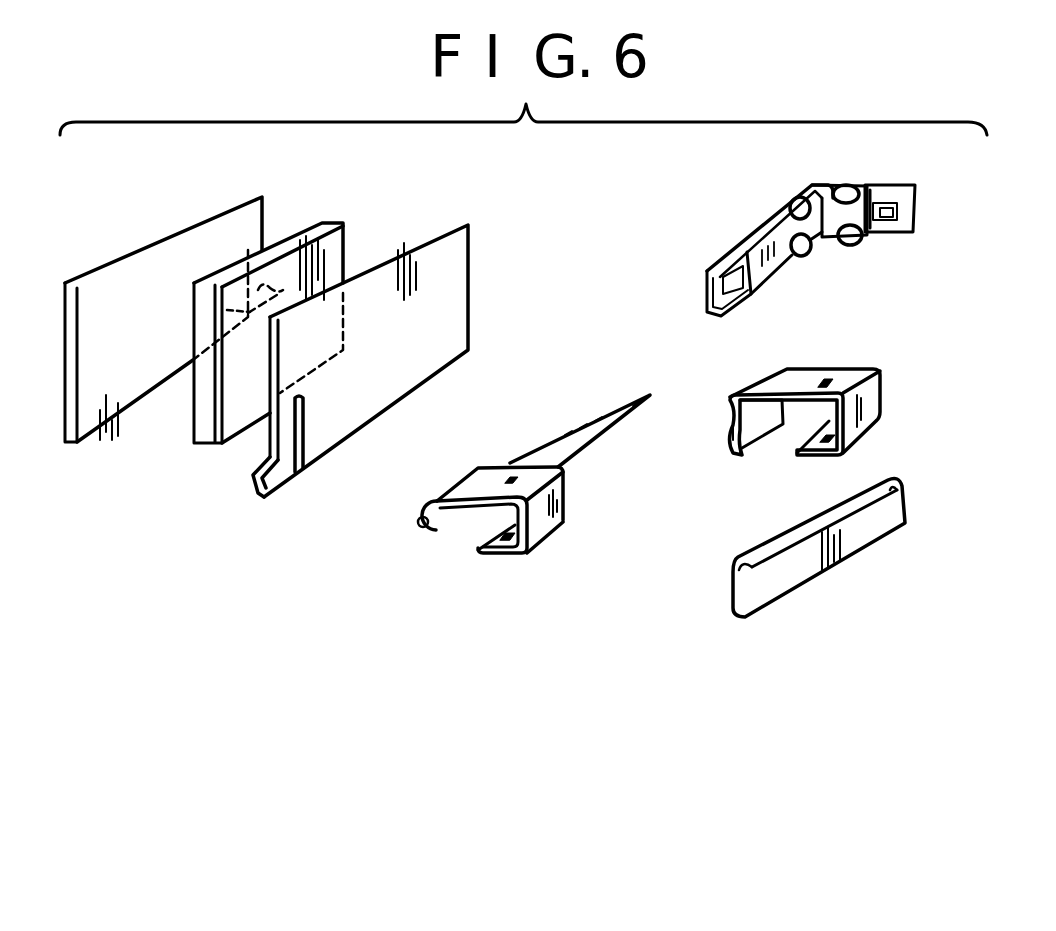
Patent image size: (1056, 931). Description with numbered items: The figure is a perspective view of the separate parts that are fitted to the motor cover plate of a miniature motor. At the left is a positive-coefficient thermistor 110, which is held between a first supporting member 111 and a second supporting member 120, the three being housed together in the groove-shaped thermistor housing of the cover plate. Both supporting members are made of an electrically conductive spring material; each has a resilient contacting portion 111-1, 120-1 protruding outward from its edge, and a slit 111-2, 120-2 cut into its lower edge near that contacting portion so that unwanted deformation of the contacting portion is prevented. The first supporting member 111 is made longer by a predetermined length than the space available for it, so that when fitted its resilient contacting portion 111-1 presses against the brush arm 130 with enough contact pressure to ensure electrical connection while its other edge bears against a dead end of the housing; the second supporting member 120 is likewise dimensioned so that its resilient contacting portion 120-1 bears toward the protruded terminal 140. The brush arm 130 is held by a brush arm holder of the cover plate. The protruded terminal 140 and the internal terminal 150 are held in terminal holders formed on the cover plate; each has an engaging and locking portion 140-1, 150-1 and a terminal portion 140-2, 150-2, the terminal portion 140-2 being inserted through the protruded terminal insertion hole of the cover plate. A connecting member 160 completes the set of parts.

The first supporting member 111 is at (158, 240).
The resilient contacting portion 111-1 is at (290, 270).
The slit 111-2 is at (227, 310).
The positive-coefficient thermistor 110 is at (343, 243).
The second supporting member 120 is at (470, 265).
The resilient contacting portion 120-1 is at (194, 500).
The slit 120-2 is at (302, 430).
The brush arm 130 is at (732, 197).
The protruded terminal 140 is at (517, 443).
The engaging and locking portion 140-1 is at (674, 568).
The terminal portion 140-2 is at (603, 412).
The internal terminal 150 is at (839, 362).
The engaging and locking portion 150-1 is at (872, 415).
The terminal portion 150-2 is at (730, 425).
The connecting member 160 is at (869, 552).